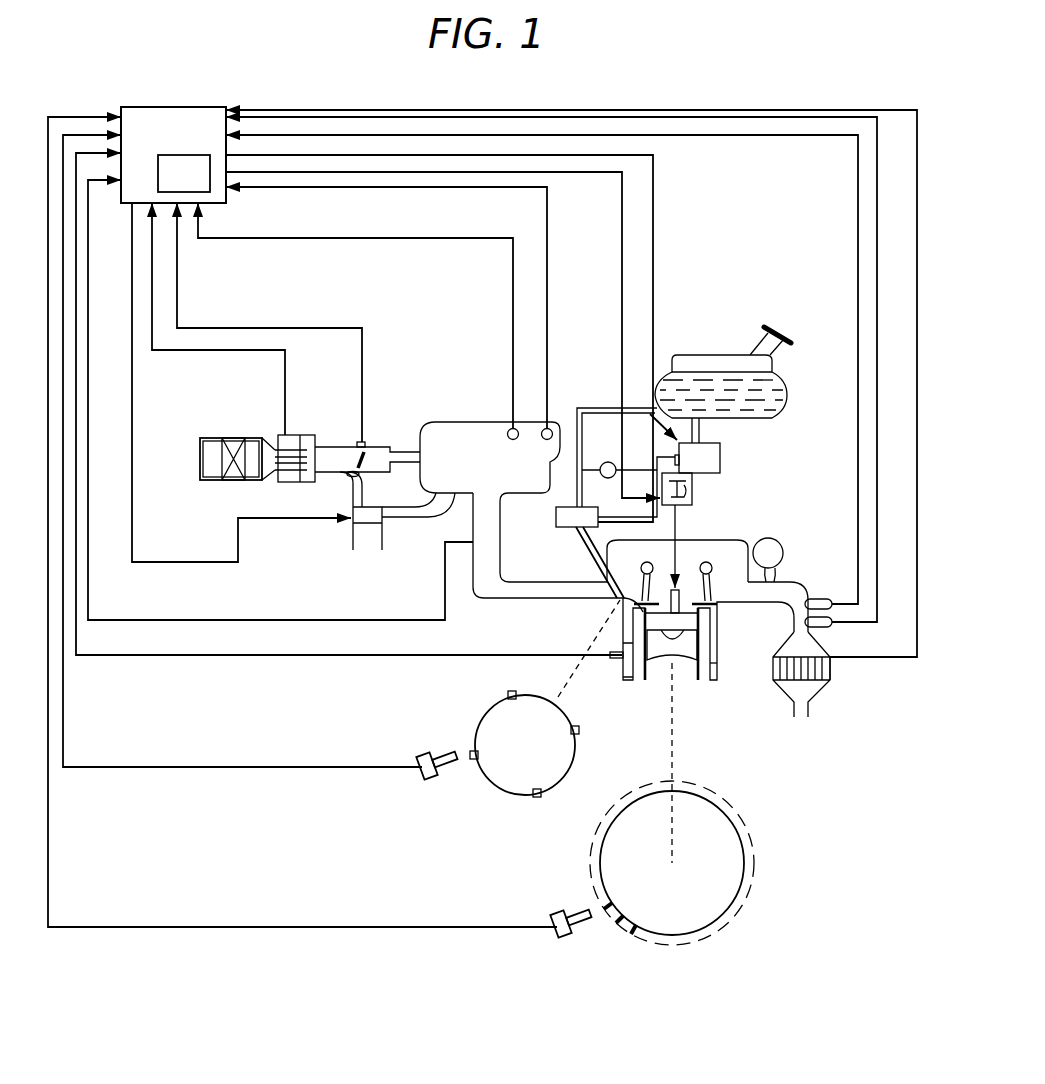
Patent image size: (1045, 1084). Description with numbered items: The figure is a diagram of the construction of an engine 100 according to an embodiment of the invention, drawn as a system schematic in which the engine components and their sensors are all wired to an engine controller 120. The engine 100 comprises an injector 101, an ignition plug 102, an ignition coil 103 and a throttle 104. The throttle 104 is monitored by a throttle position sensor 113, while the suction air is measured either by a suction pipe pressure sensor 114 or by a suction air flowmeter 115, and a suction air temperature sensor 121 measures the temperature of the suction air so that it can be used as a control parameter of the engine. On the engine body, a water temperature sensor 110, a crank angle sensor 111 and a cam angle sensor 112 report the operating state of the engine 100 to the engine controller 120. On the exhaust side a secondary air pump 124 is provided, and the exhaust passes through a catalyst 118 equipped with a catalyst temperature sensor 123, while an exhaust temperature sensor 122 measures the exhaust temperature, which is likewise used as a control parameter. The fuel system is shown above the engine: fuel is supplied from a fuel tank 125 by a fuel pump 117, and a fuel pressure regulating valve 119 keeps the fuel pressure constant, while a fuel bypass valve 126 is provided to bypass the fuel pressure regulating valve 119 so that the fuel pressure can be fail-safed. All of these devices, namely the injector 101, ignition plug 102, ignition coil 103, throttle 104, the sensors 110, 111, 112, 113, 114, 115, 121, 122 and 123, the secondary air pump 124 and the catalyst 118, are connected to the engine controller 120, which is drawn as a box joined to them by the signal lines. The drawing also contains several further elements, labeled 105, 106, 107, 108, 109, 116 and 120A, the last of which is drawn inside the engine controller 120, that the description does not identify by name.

The engine 100 is at (668, 676).
The injector 101 is at (607, 600).
The ignition plug 102 is at (681, 562).
The ignition coil 103 is at (694, 490).
The throttle 104 is at (366, 452).
The idle speed control valve 105 is at (355, 544).
The throttle motor 106 is at (225, 480).
The water temperature sensor 107 is at (723, 640).
The intake pipe 108 is at (472, 522).
The exhaust pipe 109 is at (757, 604).
The water temperature sensor 110 is at (618, 660).
The crank angle sensor 111 is at (562, 940).
The cam angle sensor 112 is at (430, 778).
The throttle position sensor 113 is at (360, 442).
The suction pipe pressure sensor 114 is at (549, 428).
The suction air flowmeter 115 is at (276, 435).
The air-fuel ratio sensor 116 is at (814, 600).
The fuel pump 117 is at (721, 458).
The catalyst 118 is at (814, 688).
The fuel pressure regulating valve 119 is at (558, 528).
The engine controller 120 is at (146, 120).
The control section 120A is at (197, 160).
The suction air temperature sensor 121 is at (512, 428).
The exhaust temperature sensor 122 is at (834, 627).
The catalyst temperature sensor 123 is at (831, 665).
The secondary air pump 124 is at (778, 550).
The fuel tank 125 is at (709, 356).
The fuel bypass valve 126 is at (606, 462).